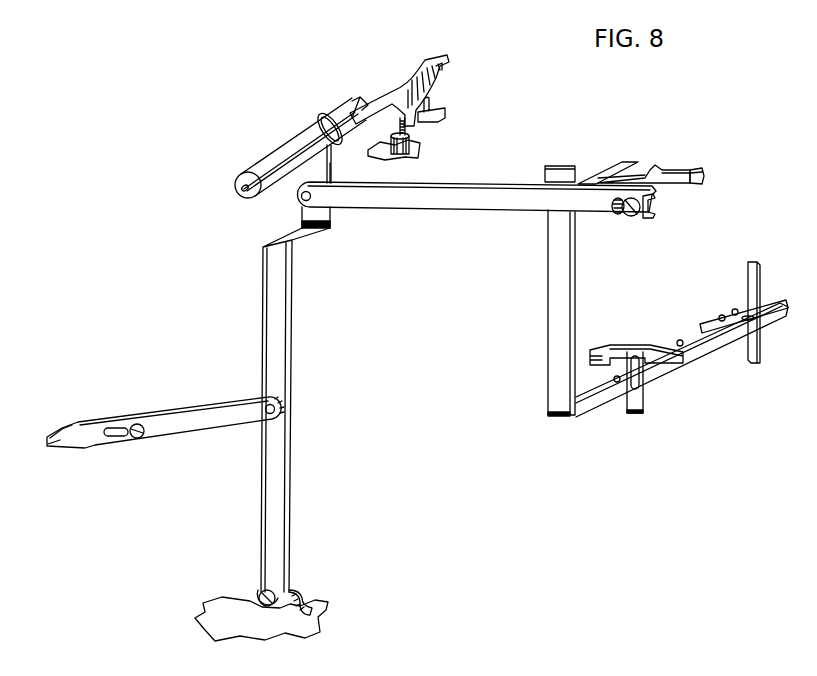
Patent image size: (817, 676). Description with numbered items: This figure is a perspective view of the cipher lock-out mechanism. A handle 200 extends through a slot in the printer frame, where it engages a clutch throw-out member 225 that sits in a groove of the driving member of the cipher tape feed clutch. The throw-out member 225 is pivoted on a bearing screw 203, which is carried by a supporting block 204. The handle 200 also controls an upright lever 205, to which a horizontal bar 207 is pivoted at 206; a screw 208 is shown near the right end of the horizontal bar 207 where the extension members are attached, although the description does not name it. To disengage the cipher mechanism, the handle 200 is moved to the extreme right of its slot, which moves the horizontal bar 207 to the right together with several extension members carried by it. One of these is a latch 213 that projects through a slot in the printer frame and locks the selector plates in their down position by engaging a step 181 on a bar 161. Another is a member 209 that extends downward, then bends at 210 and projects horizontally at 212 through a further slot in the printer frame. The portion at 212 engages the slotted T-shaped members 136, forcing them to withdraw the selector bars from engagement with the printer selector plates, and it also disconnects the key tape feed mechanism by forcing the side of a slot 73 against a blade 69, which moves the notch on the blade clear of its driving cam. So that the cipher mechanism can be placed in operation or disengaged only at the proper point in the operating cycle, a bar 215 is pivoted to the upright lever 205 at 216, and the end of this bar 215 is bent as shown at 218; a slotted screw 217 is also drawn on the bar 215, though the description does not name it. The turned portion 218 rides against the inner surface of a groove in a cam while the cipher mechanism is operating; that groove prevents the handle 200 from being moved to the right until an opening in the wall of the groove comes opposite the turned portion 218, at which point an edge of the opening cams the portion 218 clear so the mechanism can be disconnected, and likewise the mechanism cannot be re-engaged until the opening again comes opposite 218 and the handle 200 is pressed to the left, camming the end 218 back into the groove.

The handle 200 is at (290, 160).
The clutch throw-out member 225 is at (428, 57).
The bearing screw 203 is at (409, 127).
The supporting block 204 is at (410, 150).
The horizontal bar 207 is at (446, 208).
The pivot 206 is at (302, 199).
The upright lever 205 is at (292, 290).
The latch 213 is at (628, 160).
The step 181 is at (651, 164).
The bar 161 is at (696, 170).
The screw 208 is at (645, 207).
The member 209 is at (549, 262).
The bend 210 is at (568, 414).
The horizontal projection 212 is at (590, 402).
The slot 73 is at (760, 318).
The blade 69 is at (761, 270).
The slotted T-shaped member 136 is at (640, 333).
The bar 215 is at (192, 428).
The turned portion 218 is at (60, 430).
The slot screw 217 is at (121, 434).
The pivot 216 is at (266, 416).